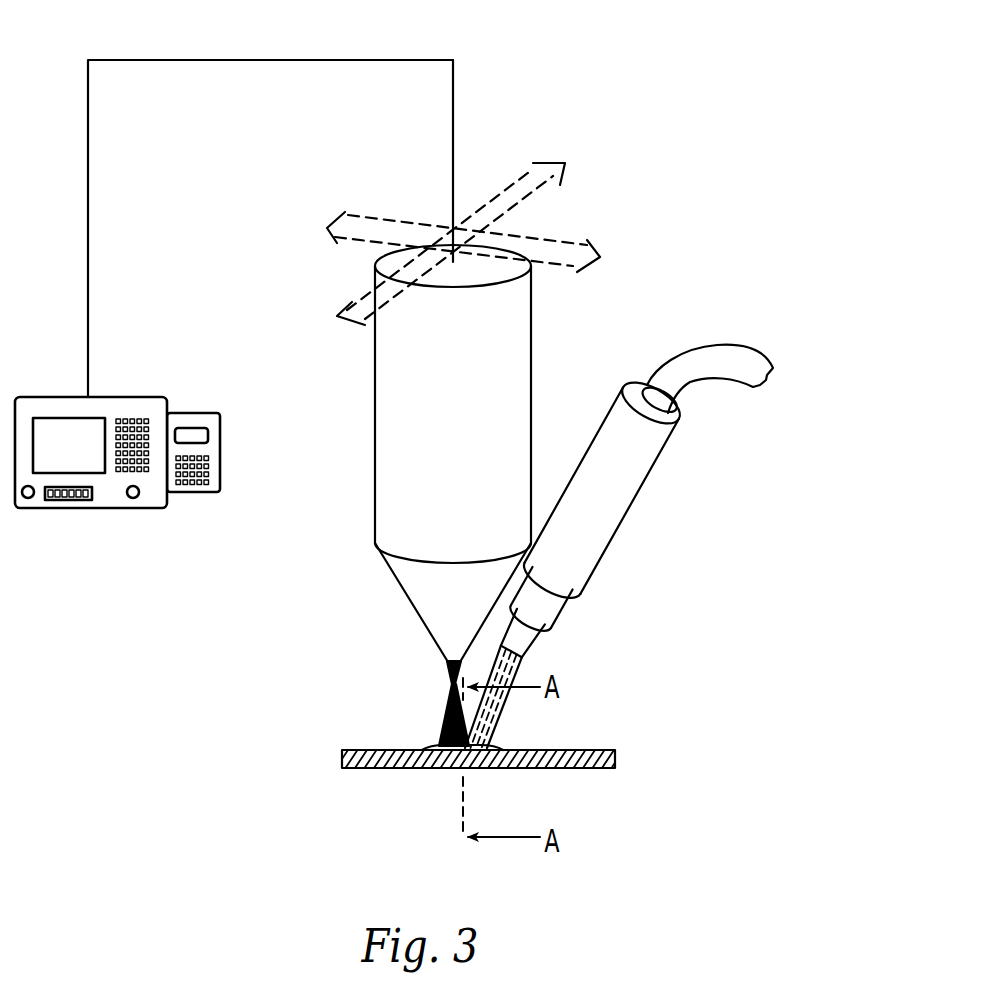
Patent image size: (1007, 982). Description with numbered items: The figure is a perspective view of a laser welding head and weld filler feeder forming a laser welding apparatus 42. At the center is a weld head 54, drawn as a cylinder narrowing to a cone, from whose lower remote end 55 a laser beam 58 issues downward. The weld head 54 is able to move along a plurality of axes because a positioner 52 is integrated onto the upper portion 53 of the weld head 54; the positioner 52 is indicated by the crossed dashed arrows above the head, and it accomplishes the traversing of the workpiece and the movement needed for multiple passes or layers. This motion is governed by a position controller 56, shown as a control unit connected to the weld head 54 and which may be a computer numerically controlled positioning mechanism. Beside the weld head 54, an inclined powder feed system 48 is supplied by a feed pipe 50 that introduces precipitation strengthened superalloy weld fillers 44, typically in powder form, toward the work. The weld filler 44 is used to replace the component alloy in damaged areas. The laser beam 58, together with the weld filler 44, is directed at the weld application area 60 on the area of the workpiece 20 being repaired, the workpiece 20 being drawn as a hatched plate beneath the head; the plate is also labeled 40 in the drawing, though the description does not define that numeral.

The workpiece 20 is at (343, 752).
The workpiece substrate 40 is at (620, 762).
The laser welding apparatus 42 is at (273, 790).
The weld filler 44 is at (499, 730).
The powder feed system 48 is at (657, 458).
The feed pipe 50 is at (782, 375).
The positioner 52 is at (578, 162).
The upper portion 53 is at (462, 262).
The weld head 54 is at (404, 383).
The lower remote end 55 is at (447, 661).
The position controller 56 is at (64, 514).
The laser beam 58 is at (446, 688).
The weld application area 60 is at (421, 741).